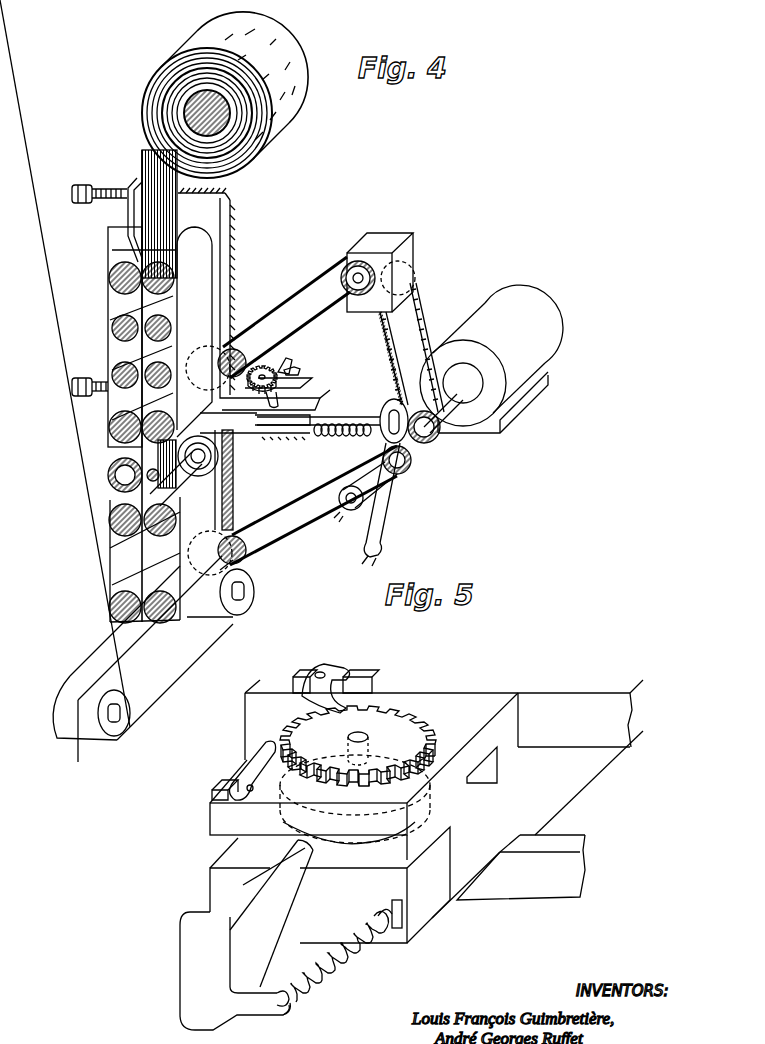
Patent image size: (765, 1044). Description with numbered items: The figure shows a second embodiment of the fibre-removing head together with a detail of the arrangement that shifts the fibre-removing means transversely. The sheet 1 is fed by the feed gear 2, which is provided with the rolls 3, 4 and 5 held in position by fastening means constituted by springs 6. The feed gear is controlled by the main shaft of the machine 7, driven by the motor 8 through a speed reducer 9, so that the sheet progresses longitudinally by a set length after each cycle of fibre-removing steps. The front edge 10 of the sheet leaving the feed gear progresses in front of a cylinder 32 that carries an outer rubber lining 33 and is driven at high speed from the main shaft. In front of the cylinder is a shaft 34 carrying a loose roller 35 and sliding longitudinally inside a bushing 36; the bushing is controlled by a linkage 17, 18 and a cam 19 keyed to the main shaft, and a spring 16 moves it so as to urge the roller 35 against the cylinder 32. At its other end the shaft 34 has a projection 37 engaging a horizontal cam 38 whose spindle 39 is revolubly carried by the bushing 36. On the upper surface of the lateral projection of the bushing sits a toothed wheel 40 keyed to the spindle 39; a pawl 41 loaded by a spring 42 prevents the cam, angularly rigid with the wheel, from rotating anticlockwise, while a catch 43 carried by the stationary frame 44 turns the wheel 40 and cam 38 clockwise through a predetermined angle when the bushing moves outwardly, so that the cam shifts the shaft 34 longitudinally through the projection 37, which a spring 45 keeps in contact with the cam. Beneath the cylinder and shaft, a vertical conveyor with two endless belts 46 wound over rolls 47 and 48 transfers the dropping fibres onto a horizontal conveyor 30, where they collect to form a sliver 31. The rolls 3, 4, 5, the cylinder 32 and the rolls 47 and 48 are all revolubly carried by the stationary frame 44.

In FIG. 4, the sheet 1 is at (283, 50).
In FIG. 4, the feed gear 2 is at (112, 303).
In FIG. 4, the roll 3 is at (112, 272).
In FIG. 4, the roll 4 is at (120, 336).
In FIG. 4, the roll 5 is at (112, 422).
In FIG. 4, the springs 6 is at (103, 185).
In FIG. 4, the main shaft of the machine 7 is at (447, 400).
In FIG. 4, the motor 8 is at (533, 320).
In FIG. 4, the speed reducer 9 is at (407, 252).
In FIG. 4, the front edge of the sheet 10 is at (143, 453).
In FIG. 4, the spring 16 is at (323, 432).
In FIG. 4, the linkage 17 is at (356, 417).
In FIG. 4, the linkage 18 is at (378, 510).
In FIG. 4, the cam 19 is at (353, 513).
In FIG. 4, the horizontal conveyor 30 is at (70, 677).
In FIG. 4, the sliver 31 is at (113, 657).
In FIG. 4, the cylinder 32 is at (120, 477).
In FIG. 4, the outer rubber lining 33 is at (108, 470).
In FIG. 4, the shaft 34 is at (225, 477).
In FIG. 5, the shaft 34 is at (260, 947).
In FIG. 4, the roller 35 is at (245, 533).
In FIG. 4, the bushing 36 is at (243, 423).
In FIG. 5, the bushing 36 is at (553, 800).
In FIG. 5, the projection 37 is at (260, 892).
In FIG. 5, the horizontal cam 38 is at (385, 920).
In FIG. 5, the spindle 39 is at (363, 736).
In FIG. 4, the toothed wheel 40 is at (262, 362).
In FIG. 5, the toothed wheel 40 is at (410, 730).
In FIG. 4, the pawl 41 is at (293, 377).
In FIG. 5, the pawl 41 is at (258, 747).
In FIG. 5, the spring 42 is at (247, 760).
In FIG. 4, the catch 43 is at (292, 392).
In FIG. 5, the catch 43 is at (323, 685).
In FIG. 4, the stationary frame 44 is at (212, 222).
In FIG. 5, the spring 45 is at (313, 987).
In FIG. 4, the endless belts 46 is at (180, 552).
In FIG. 4, the rolls 47 is at (113, 522).
In FIG. 4, the rolls 48 is at (122, 625).